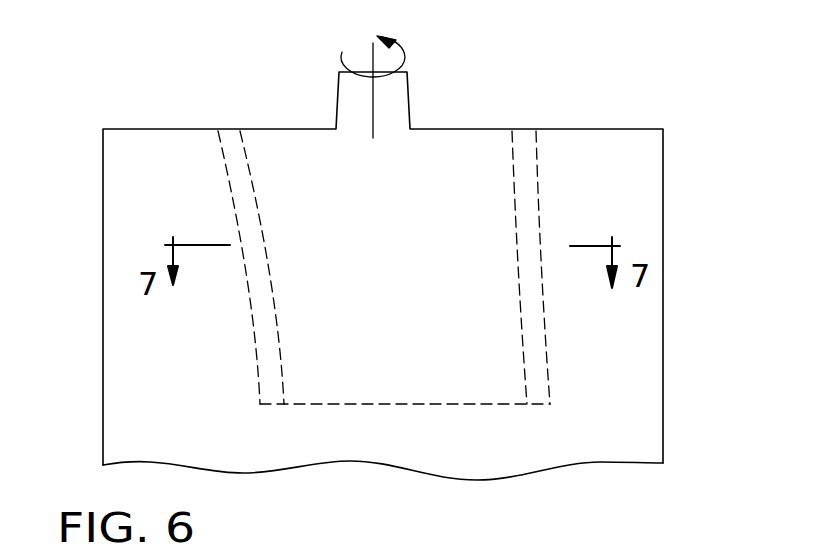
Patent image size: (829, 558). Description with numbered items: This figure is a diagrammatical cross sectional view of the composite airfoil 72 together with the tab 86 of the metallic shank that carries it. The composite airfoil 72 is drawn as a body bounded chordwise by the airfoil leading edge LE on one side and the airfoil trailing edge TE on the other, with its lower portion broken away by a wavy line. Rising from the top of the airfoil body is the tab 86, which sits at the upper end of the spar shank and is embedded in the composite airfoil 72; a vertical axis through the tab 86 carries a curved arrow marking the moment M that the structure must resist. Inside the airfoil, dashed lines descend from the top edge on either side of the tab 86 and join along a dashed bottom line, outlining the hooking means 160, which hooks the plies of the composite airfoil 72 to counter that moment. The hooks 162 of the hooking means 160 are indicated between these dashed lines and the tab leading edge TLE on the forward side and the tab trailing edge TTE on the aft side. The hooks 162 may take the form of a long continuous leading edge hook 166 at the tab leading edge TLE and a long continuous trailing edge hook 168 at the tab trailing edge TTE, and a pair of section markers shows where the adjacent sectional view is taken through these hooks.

The composite airfoil 72 is at (663, 235).
The tab 86 is at (453, 129).
The hooking means 160 is at (558, 105).
The hooks 162 is at (232, 149).
The leading edge hook 166 is at (262, 279).
The trailing edge hook 168 is at (533, 375).
The tab leading edge TLE is at (256, 325).
The tab trailing edge TTE is at (545, 305).
The airfoil leading edge LE is at (103, 366).
The airfoil trailing edge TE is at (663, 378).